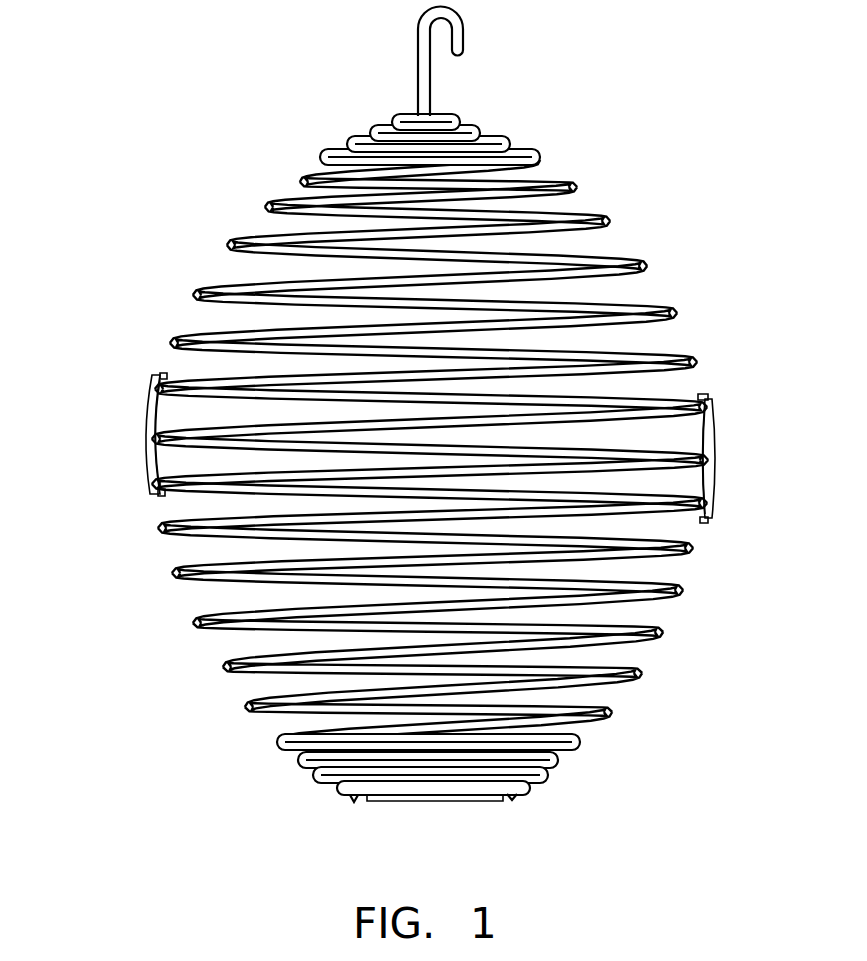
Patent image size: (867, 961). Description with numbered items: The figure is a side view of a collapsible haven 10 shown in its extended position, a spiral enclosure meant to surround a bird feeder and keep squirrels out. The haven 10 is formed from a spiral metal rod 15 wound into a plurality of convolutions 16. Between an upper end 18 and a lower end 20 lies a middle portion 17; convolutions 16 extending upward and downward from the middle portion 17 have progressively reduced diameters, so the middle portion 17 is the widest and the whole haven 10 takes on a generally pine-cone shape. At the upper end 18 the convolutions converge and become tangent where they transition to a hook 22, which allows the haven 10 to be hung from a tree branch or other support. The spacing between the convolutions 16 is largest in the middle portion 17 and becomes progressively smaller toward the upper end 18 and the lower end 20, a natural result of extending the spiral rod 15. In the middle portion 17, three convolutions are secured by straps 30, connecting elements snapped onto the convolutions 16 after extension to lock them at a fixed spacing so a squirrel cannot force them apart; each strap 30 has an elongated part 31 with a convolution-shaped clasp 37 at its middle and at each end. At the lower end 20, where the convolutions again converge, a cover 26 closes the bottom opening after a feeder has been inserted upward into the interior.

The collapsible haven 10 is at (423, 439).
The spiral metal rod 15 is at (466, 451).
The convolutions 16 is at (650, 266).
The middle portion 17 is at (423, 444).
The upper end 18 is at (380, 107).
The lower end 20 is at (346, 806).
The hook 22 is at (463, 36).
The cover 26 is at (452, 803).
The straps 30 is at (143, 437).
The elongated part 31 is at (143, 470).
The clasps 37 is at (150, 408).